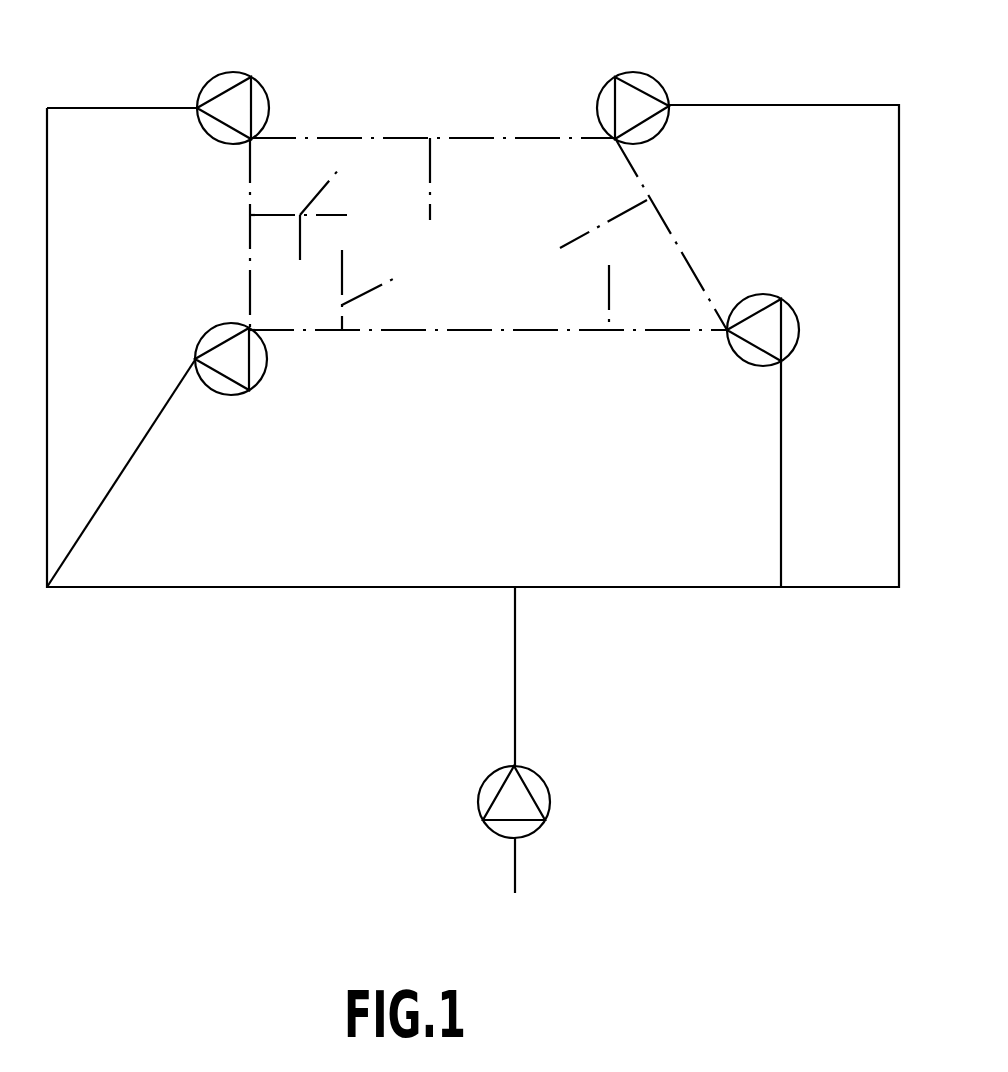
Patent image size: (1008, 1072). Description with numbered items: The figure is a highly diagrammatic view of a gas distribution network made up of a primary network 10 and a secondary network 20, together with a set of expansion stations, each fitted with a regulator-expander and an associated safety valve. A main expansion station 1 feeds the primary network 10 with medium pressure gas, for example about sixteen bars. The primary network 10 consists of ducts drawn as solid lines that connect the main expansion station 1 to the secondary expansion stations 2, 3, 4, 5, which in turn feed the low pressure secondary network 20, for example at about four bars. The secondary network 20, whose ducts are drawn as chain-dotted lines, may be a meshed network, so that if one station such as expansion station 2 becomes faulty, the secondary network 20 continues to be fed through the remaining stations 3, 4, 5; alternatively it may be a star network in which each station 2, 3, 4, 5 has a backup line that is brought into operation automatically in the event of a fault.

The main expansion station 1 is at (482, 797).
The secondary expansion station 2 is at (207, 340).
The secondary expansion station 3 is at (212, 85).
The secondary expansion station 4 is at (623, 78).
The secondary expansion station 5 is at (748, 356).
The primary network 10 is at (118, 601).
The secondary network 20 is at (527, 338).